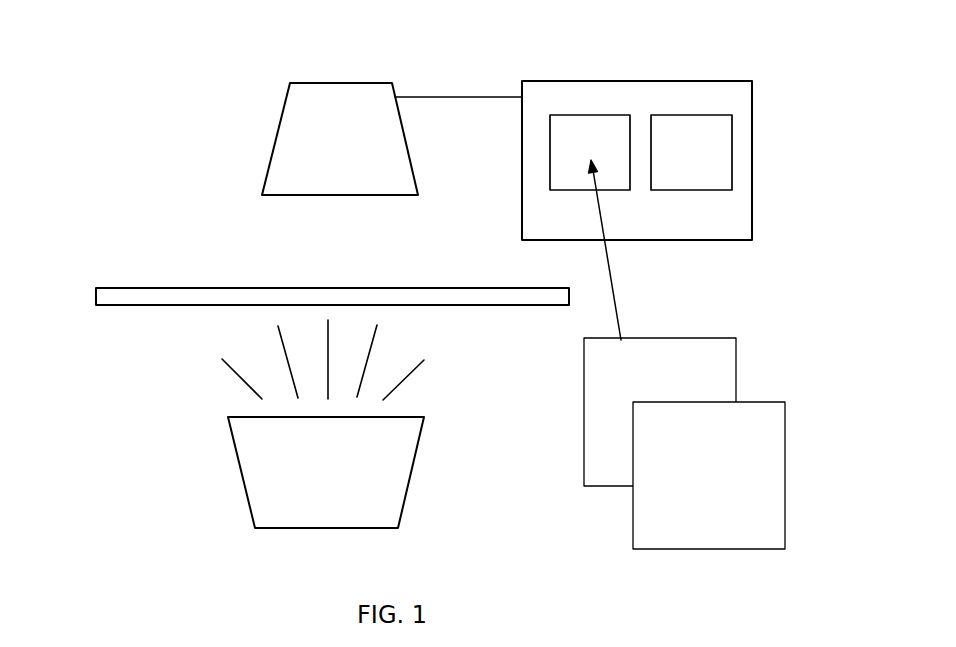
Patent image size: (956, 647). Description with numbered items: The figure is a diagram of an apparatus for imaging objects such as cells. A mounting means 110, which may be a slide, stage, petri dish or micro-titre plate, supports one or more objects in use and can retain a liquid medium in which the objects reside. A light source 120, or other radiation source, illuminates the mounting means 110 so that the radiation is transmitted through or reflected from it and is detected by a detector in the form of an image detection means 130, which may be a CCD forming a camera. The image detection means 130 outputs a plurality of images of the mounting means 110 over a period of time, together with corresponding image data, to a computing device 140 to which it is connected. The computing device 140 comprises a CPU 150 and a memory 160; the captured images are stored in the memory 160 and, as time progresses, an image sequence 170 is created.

The mounting means 110 is at (145, 294).
The light source 120 is at (270, 509).
The image detection means 130 is at (337, 97).
The computing device 140 is at (732, 223).
The CPU 150 is at (695, 136).
The memory 160 is at (587, 126).
The image sequence 170 is at (735, 403).